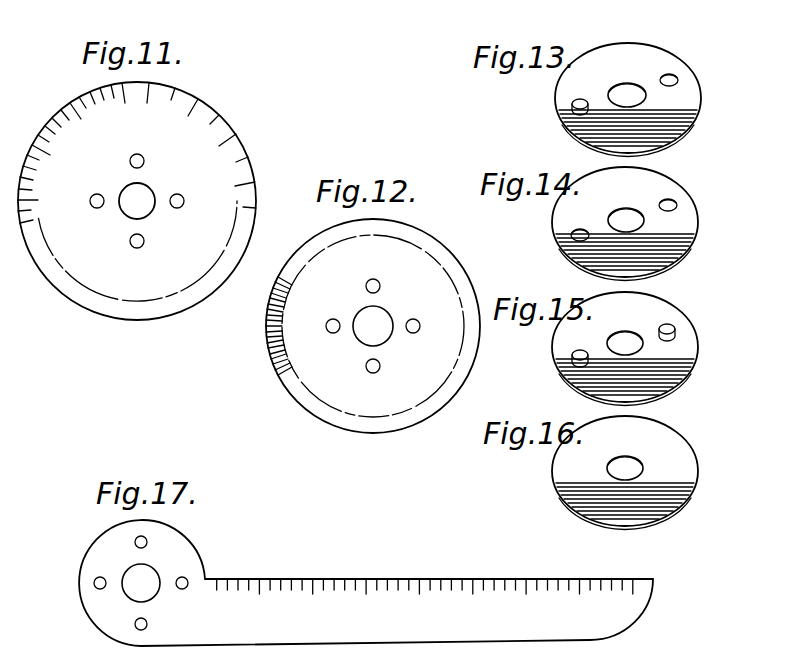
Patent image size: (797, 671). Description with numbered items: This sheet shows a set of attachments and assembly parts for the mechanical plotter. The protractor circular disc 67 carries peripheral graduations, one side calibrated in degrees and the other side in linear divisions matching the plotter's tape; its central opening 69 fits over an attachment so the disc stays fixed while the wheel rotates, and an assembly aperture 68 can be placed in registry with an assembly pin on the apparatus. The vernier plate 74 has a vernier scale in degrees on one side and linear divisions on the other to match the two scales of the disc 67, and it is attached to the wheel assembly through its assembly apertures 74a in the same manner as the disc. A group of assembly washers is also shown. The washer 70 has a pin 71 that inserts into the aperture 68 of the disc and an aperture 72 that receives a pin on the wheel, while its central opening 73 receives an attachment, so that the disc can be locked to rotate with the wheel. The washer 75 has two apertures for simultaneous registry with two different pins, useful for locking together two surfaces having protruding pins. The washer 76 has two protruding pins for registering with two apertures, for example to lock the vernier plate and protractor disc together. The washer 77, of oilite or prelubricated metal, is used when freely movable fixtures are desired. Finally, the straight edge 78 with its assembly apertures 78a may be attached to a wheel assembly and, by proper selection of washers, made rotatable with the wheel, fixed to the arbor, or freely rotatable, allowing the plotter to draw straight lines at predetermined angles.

In FIG. 11, the protractor circular disc 67 is at (203, 133).
In FIG. 11, the assembly aperture 68 is at (137, 154).
In FIG. 11, the central opening 69 is at (148, 194).
In FIG. 12, the vernier plate 74 is at (297, 358).
In FIG. 12, the assembly apertures 74a is at (367, 284).
In FIG. 13, the washer 70 is at (642, 53).
In FIG. 13, the pin 71 is at (571, 107).
In FIG. 13, the aperture 72 is at (672, 78).
In FIG. 13, the central opening 73 is at (612, 90).
In FIG. 14, the washer 75 is at (687, 208).
In FIG. 15, the washer 76 is at (685, 338).
In FIG. 16, the washer 77 is at (680, 449).
In FIG. 17, the straight edge 78 is at (297, 592).
In FIG. 17, the assembly apertures 78a is at (125, 551).